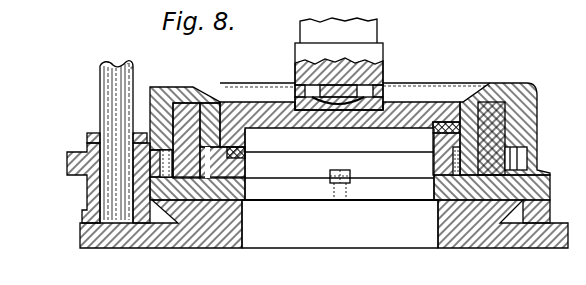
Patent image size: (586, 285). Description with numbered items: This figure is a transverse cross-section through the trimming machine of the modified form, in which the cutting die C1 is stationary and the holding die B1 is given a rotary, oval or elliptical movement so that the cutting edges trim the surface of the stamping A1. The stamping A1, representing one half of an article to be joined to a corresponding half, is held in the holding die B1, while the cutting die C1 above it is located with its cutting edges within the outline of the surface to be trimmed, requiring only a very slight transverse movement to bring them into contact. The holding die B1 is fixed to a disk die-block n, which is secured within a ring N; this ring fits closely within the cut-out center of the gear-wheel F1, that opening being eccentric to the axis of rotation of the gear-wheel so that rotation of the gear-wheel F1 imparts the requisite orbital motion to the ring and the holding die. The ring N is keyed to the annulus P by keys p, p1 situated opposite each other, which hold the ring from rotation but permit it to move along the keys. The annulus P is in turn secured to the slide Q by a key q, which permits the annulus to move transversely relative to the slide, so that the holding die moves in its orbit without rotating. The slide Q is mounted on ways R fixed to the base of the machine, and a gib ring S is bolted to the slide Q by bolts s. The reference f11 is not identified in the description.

The gear-wheel F1 is at (150, 110).
The ring N is at (207, 112).
The disk die-block n is at (238, 110).
The holding die B1 is at (296, 100).
The cutting die C1 is at (356, 63).
The stamping A1 is at (384, 84).
The gib ring S is at (492, 83).
The bolts s is at (521, 83).
The adjusting block f11 is at (67, 163).
The key p is at (245, 149).
The key p1 is at (440, 146).
The key q is at (351, 180).
The annulus P is at (285, 163).
The ways R is at (193, 207).
The slide Q is at (225, 190).